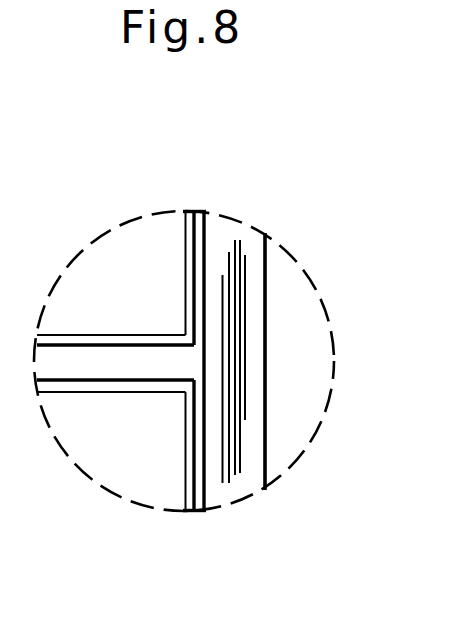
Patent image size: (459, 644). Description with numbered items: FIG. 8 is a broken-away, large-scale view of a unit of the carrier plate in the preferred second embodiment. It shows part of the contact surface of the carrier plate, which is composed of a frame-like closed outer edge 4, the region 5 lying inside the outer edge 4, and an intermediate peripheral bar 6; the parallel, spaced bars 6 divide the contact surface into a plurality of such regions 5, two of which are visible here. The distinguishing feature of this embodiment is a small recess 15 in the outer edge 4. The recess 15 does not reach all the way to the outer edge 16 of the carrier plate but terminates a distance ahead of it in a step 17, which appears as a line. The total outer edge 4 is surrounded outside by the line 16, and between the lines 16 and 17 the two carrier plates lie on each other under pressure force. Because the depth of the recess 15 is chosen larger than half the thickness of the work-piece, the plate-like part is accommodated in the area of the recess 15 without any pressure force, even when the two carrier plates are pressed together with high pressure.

The outer edge 4 is at (217, 272).
The region 5 is at (143, 268).
The intermediate peripheral bar 6 is at (91, 367).
The recess 15 is at (200, 463).
The outer edge line 16 is at (265, 437).
The step 17 is at (203, 340).